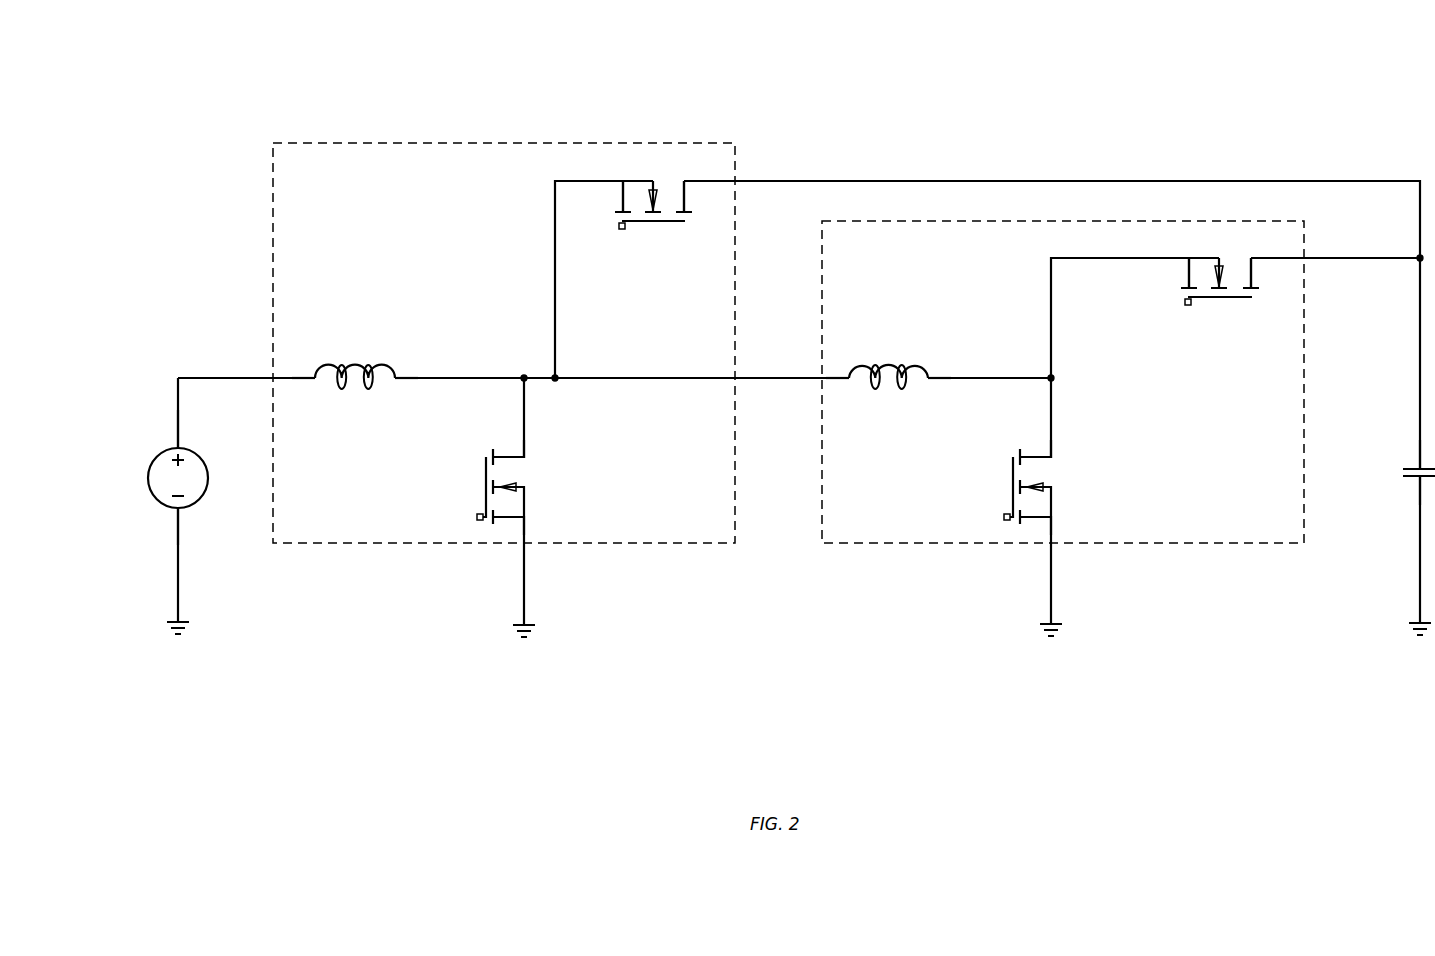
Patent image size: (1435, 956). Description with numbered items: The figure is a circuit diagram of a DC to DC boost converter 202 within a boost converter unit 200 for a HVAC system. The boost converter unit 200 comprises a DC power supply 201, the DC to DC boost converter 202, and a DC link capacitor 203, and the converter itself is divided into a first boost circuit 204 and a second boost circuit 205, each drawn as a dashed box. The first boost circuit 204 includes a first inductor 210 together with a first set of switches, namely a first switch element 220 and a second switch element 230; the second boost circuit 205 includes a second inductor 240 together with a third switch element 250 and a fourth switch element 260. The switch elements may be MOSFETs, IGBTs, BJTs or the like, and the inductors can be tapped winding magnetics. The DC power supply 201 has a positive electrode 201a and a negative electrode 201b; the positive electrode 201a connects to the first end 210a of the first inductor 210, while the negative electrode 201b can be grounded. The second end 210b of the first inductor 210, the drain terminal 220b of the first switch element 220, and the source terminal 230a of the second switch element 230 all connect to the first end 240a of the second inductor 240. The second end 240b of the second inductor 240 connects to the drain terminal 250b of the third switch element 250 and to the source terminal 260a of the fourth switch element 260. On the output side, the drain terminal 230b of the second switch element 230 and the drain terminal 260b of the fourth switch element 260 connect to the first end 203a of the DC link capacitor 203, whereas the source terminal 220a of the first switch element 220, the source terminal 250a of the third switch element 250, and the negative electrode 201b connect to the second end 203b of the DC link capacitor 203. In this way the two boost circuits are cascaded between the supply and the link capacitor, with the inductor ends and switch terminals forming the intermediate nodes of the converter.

The boost converter unit 200 is at (194, 146).
The DC power supply 201 is at (151, 451).
The positive electrode 201a is at (188, 434).
The negative electrode 201b is at (188, 518).
The DC to DC boost converter 202 is at (822, 90).
The DC link capacitor 203 is at (1396, 474).
The first end of DC link capacitor 203a is at (1414, 462).
The second end of DC link capacitor 203b is at (1414, 484).
The first boost circuit 204 is at (270, 246).
The second boost circuit 205 is at (819, 273).
The first inductor 210 is at (354, 352).
The first end of first inductor 210a is at (301, 372).
The second end of first inductor 210b is at (407, 372).
The first switch element 220 is at (472, 479).
The source terminal of first switch element 220a is at (512, 524).
The drain terminal of first switch element 220b is at (512, 448).
The second switch element 230 is at (652, 228).
The source terminal of second switch element 230a is at (602, 190).
The drain terminal of second switch element 230b is at (698, 190).
The second inductor 240 is at (887, 352).
The first end of second inductor 240a is at (843, 372).
The second end of second inductor 240b is at (941, 372).
The third switch element 250 is at (997, 479).
The source terminal of third switch element 250a is at (1037, 524).
The drain terminal of third switch element 250b is at (1037, 448).
The fourth switch element 260 is at (1219, 304).
The source terminal of fourth switch element 260a is at (1172, 268).
The drain terminal of fourth switch element 260b is at (1267, 268).